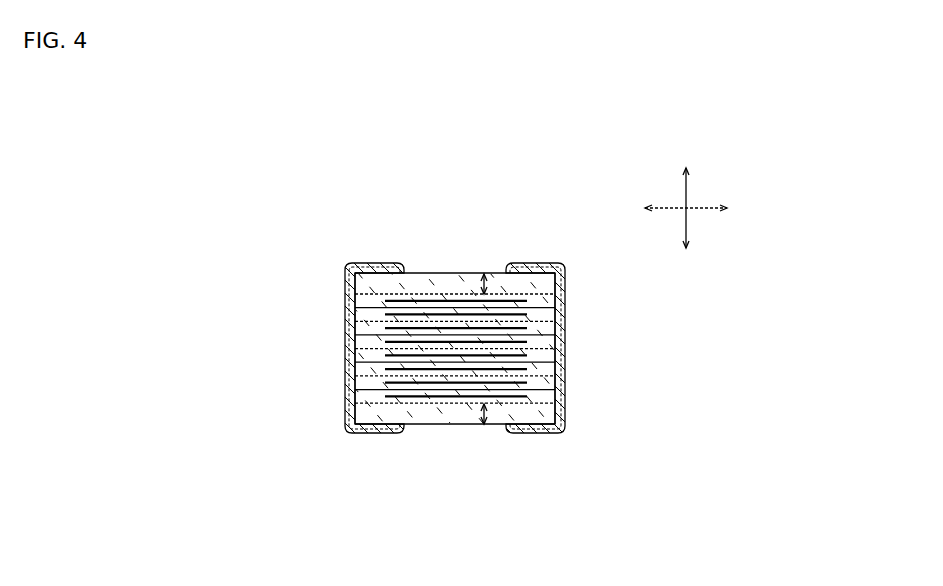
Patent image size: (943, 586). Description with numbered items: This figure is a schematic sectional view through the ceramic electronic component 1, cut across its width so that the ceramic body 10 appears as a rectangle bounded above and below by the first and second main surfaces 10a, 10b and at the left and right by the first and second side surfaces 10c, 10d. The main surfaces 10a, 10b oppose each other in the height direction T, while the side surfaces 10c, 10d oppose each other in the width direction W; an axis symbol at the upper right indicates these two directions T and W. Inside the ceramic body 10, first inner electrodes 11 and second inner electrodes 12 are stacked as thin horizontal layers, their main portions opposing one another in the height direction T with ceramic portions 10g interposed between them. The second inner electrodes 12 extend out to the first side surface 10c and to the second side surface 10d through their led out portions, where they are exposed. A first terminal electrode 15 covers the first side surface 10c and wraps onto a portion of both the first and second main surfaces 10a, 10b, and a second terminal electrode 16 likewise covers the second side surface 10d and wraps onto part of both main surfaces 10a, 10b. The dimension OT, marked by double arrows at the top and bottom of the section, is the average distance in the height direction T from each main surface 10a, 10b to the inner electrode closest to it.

The ceramic electronic component 1 is at (617, 222).
The ceramic body 10 is at (467, 272).
The first main surface 10a is at (433, 273).
The second main surface 10b is at (422, 424).
The first side surface 10c is at (355, 403).
The second side surface 10d is at (555, 402).
The ceramic portion 10g is at (495, 397).
The first inner electrode 11 is at (458, 408).
The second inner electrode 12 is at (400, 398).
The first terminal electrode 15 is at (345, 373).
The second terminal electrode 16 is at (567, 337).
The outer layer thickness OT is at (487, 283).
The height direction T is at (686, 188).
The width direction W is at (703, 208).